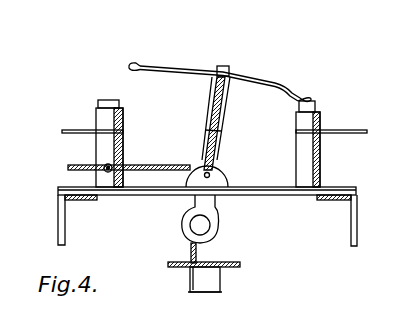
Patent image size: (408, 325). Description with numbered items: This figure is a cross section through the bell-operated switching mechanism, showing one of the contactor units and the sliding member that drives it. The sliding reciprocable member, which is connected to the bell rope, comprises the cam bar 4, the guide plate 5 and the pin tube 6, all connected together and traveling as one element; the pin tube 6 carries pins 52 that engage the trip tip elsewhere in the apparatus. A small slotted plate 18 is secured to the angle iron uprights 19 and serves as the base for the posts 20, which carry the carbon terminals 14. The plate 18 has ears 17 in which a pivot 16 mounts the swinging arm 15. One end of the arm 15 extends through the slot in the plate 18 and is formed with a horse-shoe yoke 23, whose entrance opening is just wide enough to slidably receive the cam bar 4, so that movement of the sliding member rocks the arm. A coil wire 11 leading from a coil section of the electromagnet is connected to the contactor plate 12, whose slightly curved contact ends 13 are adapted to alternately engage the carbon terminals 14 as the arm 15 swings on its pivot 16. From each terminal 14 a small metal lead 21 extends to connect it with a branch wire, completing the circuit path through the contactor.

The cam bar 4 is at (197, 255).
The guide plate 5 is at (235, 266).
The pin tube 6 is at (190, 278).
The coil wire 11 is at (160, 162).
The contactor plate 12 is at (212, 70).
The contact ends 13 is at (135, 62).
The carbon terminals 14 is at (103, 100).
The swinging arm 15 is at (222, 146).
The pivot 16 is at (211, 176).
The ears 17 is at (218, 171).
The slotted plate 18 is at (281, 196).
The uprights 19 is at (66, 230).
The posts 20 is at (92, 149).
The metal lead 21 is at (75, 130).
The horse-shoe yoke 23 is at (219, 233).
The pins 52 is at (198, 291).